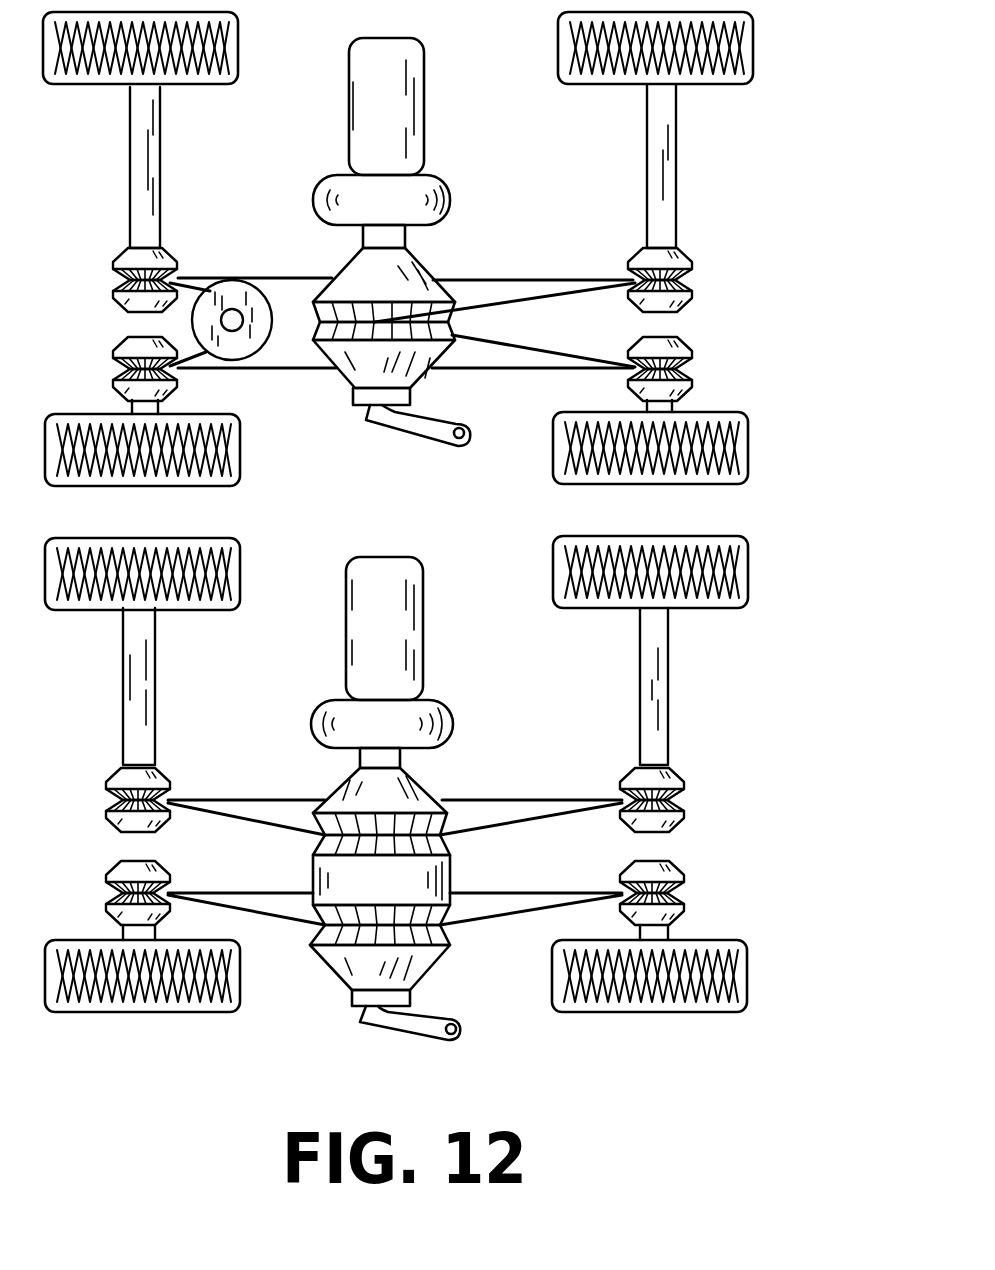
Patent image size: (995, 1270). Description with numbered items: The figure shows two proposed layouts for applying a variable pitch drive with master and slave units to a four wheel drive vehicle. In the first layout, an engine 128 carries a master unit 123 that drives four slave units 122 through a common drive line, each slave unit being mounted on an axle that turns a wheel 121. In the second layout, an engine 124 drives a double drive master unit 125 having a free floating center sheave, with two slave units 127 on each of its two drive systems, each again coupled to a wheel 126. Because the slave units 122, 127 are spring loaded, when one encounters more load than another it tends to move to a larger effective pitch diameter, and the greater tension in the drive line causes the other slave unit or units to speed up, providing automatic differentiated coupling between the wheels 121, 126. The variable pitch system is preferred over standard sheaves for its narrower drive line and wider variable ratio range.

The wheel 121 is at (720, 92).
The slave units 122 is at (684, 343).
The conical drive pulley 123 is at (418, 256).
The engine 128 is at (424, 105).
The engine 124 is at (423, 640).
The double drive master unit 125 is at (412, 772).
The wheel 126 is at (757, 566).
The slave units 127 is at (682, 858).